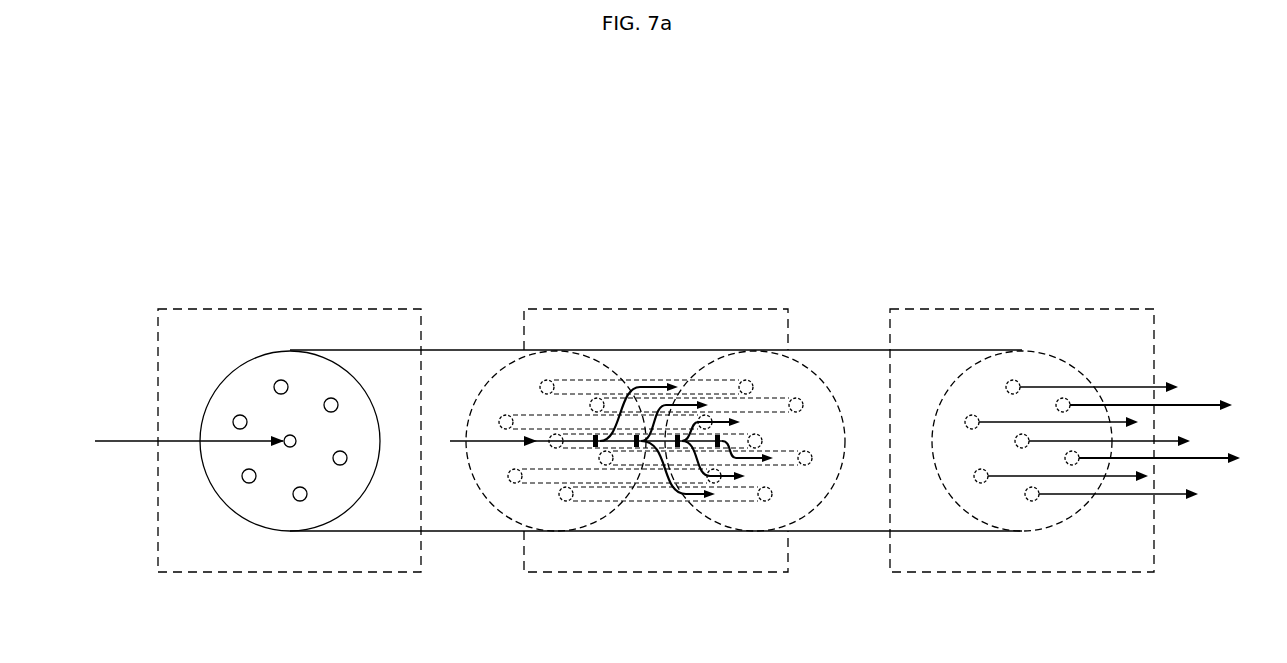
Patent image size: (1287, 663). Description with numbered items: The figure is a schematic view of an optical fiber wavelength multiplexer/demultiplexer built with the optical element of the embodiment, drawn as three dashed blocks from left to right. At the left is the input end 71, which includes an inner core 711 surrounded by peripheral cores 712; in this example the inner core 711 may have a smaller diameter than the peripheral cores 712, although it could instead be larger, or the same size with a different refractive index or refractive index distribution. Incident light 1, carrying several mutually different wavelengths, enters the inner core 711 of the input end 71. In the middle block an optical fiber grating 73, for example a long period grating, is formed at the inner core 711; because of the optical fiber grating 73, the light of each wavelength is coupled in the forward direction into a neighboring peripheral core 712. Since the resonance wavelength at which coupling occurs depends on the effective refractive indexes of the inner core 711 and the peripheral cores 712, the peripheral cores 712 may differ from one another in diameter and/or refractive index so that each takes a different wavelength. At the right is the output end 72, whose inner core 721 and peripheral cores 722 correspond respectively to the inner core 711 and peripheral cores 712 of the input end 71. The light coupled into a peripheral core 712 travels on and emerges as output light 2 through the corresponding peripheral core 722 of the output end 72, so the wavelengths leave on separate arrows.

The incident light 1 is at (128, 443).
The input end 71 is at (232, 308).
The inner core 711 is at (294, 447).
The peripheral cores 712 is at (281, 380).
The optical fiber grating 73 is at (734, 308).
The output end 72 is at (1104, 308).
The inner core 721 is at (1012, 442).
The peripheral core 722 is at (966, 415).
The output light 2 is at (1118, 478).